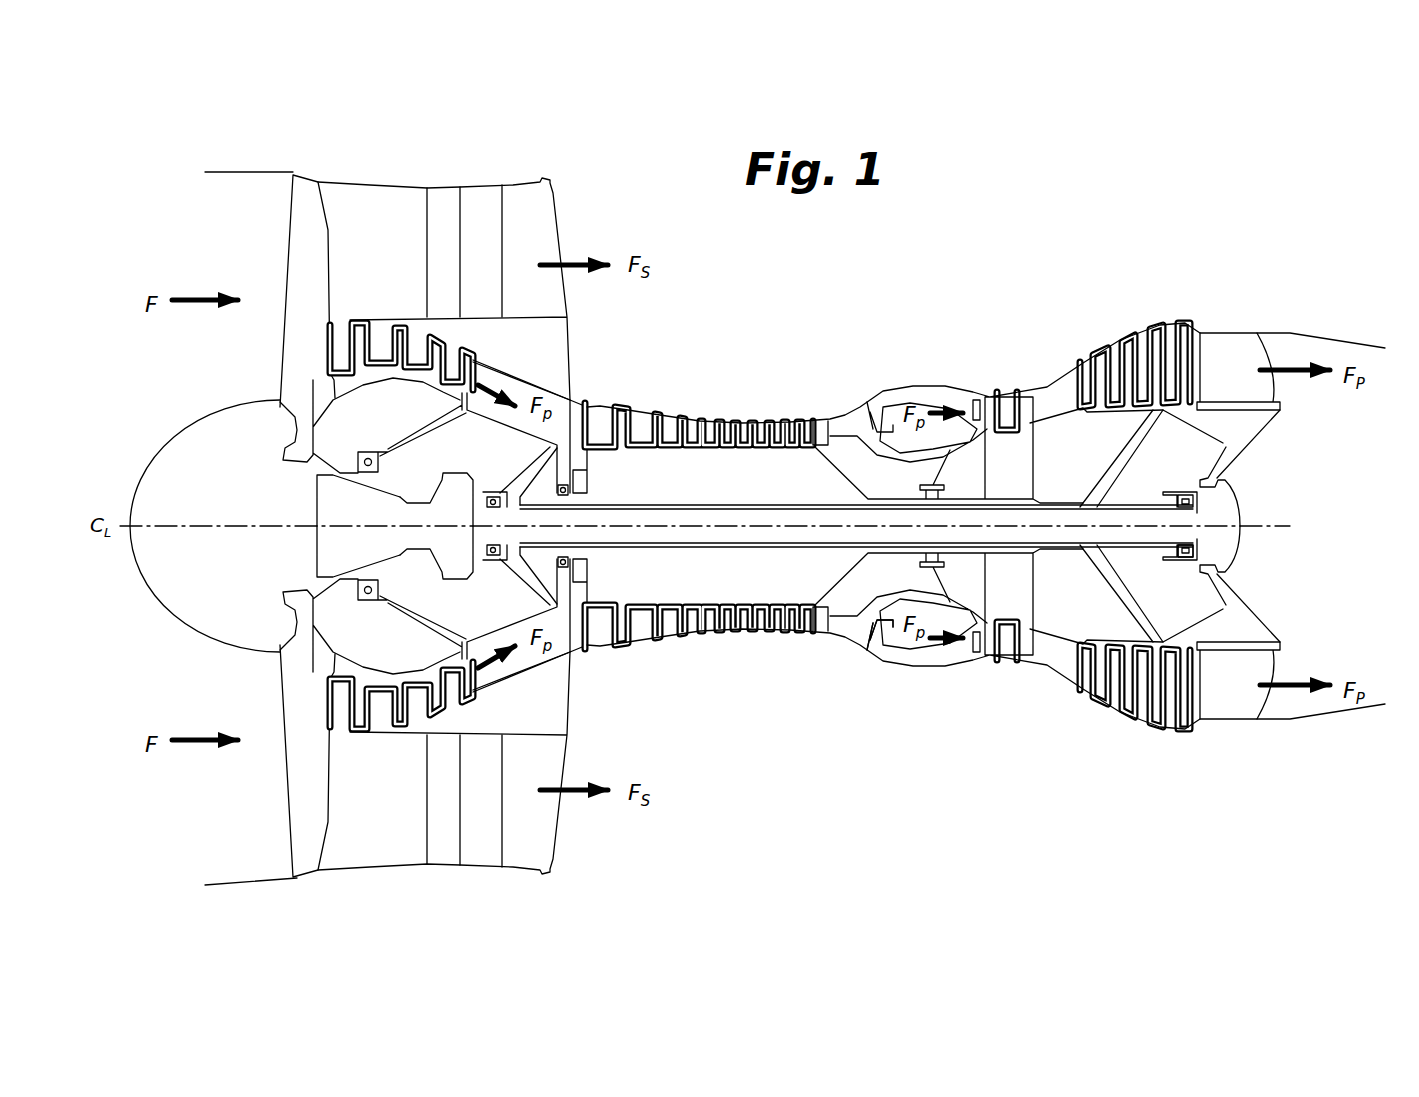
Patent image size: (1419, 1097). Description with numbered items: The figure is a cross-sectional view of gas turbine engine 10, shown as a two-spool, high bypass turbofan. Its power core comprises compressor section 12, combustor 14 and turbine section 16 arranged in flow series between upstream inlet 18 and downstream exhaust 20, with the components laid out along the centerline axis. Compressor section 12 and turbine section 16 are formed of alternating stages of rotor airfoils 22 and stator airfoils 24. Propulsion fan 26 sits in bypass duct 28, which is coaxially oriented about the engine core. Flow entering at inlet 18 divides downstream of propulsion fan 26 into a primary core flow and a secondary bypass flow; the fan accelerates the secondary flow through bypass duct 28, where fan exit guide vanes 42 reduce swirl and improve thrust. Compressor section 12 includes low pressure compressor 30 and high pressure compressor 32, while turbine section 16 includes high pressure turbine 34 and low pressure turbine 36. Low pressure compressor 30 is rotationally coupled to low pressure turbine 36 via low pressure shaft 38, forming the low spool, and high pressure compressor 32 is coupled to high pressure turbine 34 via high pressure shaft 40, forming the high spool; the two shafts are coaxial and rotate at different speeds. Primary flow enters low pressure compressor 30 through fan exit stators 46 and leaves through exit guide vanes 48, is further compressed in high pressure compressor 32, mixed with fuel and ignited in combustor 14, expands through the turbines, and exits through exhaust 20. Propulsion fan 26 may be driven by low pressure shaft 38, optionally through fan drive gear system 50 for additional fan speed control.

The gas turbine engine 10 is at (172, 140).
The compressor section 12 is at (820, 896).
The combustor 14 is at (927, 392).
The turbine section 16 is at (1207, 773).
The inlet 18 is at (190, 398).
The exhaust 20 is at (1325, 473).
The rotor airfoils 22 is at (627, 413).
The stator airfoils 24 is at (666, 420).
The propulsion fan 26 is at (302, 258).
The bypass duct 28 is at (402, 243).
The low pressure compressor 30 is at (512, 690).
The high pressure compressor 32 is at (714, 645).
The high pressure turbine 34 is at (1015, 672).
The low pressure turbine 36 is at (1097, 712).
The low pressure shaft 38 is at (750, 537).
The high pressure shaft 40 is at (868, 553).
The fan exit guide vanes 42 is at (438, 205).
The fan exit stators 46 is at (352, 343).
The exit guide vanes 48 is at (493, 368).
The fan drive gear system 50 is at (460, 470).